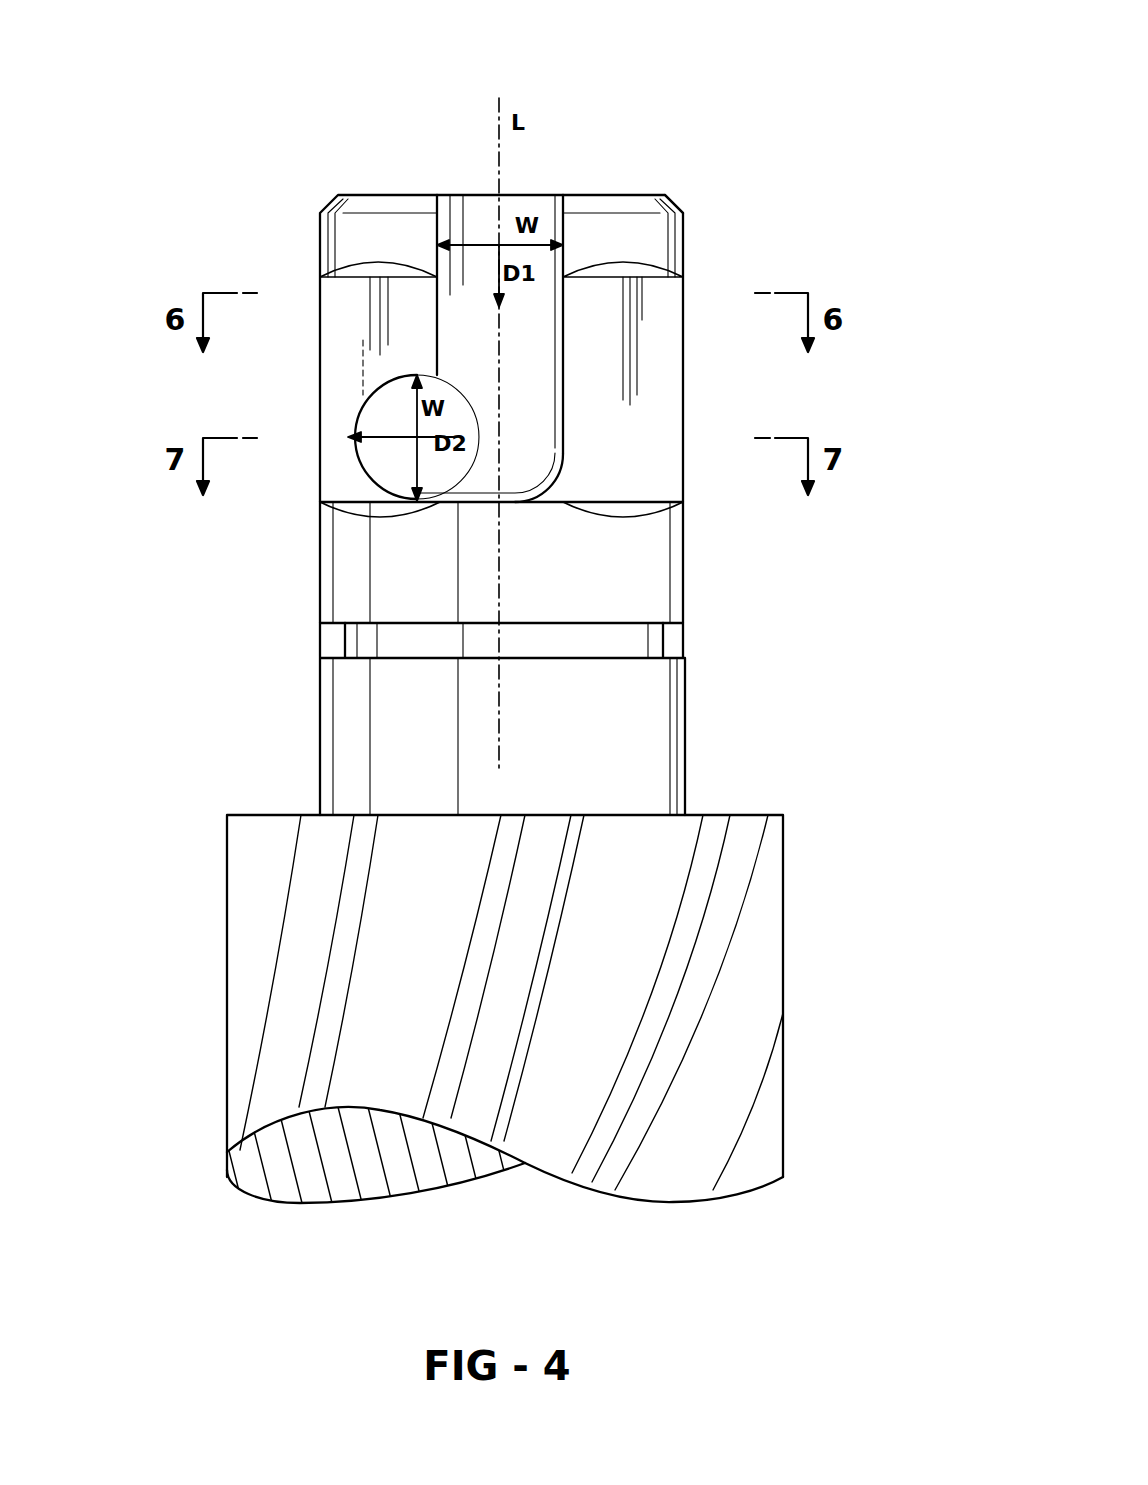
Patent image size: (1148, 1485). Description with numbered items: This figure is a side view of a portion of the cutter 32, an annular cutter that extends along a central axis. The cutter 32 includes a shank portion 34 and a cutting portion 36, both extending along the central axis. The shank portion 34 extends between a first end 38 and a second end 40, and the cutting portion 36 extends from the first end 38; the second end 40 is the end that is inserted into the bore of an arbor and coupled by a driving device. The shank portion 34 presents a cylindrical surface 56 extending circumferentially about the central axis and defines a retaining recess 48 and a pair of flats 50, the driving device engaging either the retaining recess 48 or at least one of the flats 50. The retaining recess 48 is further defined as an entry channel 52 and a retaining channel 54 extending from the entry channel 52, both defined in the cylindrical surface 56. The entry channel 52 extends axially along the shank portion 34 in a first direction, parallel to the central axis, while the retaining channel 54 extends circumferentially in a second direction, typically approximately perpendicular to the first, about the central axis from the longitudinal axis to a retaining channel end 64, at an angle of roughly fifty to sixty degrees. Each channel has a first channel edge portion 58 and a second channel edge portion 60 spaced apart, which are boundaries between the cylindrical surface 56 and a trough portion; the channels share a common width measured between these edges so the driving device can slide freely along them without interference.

The cutter 32 is at (783, 940).
The shank portion 34 is at (320, 213).
The cutting portion 36 is at (770, 1097).
The first end 38 is at (321, 812).
The second end 40 is at (610, 196).
The retaining recess 48 is at (487, 207).
The pair of flats 50 is at (357, 285).
The entry channel 52 is at (540, 210).
The retaining channel 54 is at (450, 487).
The cylindrical surface 56 is at (683, 240).
The first channel edge portion 58 is at (437, 327).
The second channel edge portion 60 is at (563, 380).
The retaining channel end 64 is at (377, 455).